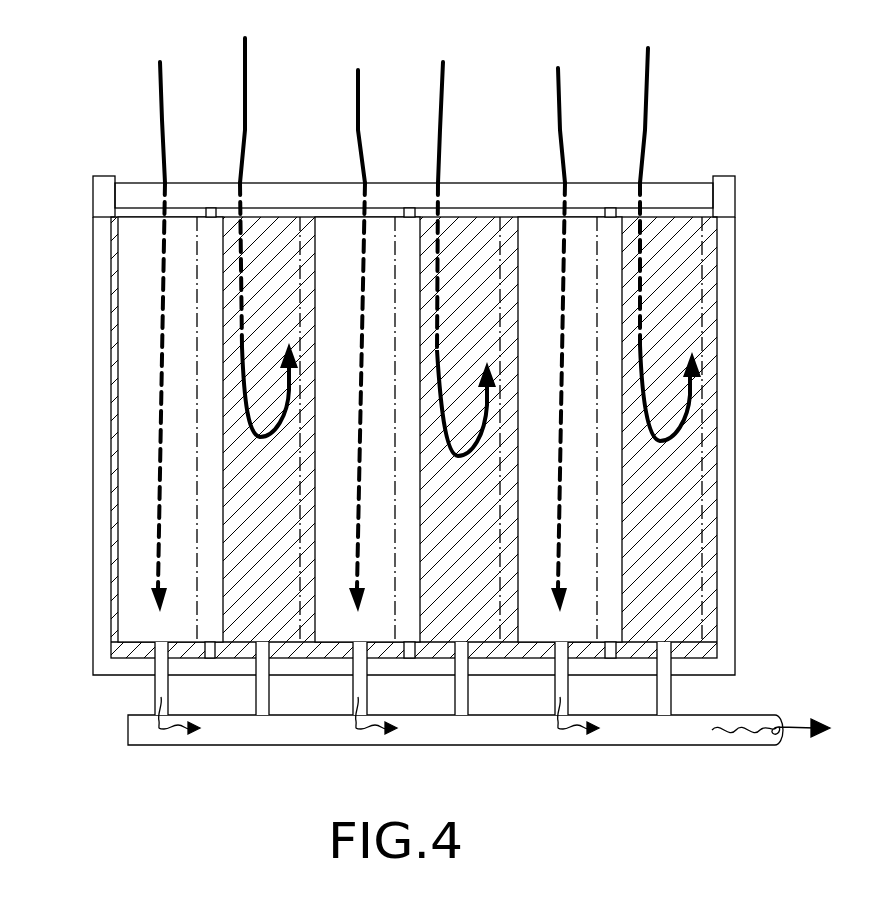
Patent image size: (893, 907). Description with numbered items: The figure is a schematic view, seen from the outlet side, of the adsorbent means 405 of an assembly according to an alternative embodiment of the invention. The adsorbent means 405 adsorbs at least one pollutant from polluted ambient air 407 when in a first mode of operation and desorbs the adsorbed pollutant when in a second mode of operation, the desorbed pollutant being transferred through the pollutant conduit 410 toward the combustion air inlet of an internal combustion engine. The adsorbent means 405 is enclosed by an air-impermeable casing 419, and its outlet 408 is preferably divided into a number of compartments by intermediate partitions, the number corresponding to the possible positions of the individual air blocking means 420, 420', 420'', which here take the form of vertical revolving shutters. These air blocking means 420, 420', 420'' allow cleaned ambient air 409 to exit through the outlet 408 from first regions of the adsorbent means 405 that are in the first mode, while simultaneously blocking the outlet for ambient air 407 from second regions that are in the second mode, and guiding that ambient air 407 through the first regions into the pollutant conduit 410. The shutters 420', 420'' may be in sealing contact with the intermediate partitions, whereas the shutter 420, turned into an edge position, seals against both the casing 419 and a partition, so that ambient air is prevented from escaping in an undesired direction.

The adsorbent means 405 is at (663, 500).
The polluted ambient air 407 is at (160, 128).
The outlet 408 is at (682, 624).
The cleaned ambient air 409 is at (284, 388).
The pollutant conduit 410 is at (668, 727).
The air-impermeable casing 419 is at (725, 309).
The air blocking means 420 is at (121, 471).
The air blocking means 420' is at (351, 507).
The air blocking means 420'' is at (567, 517).